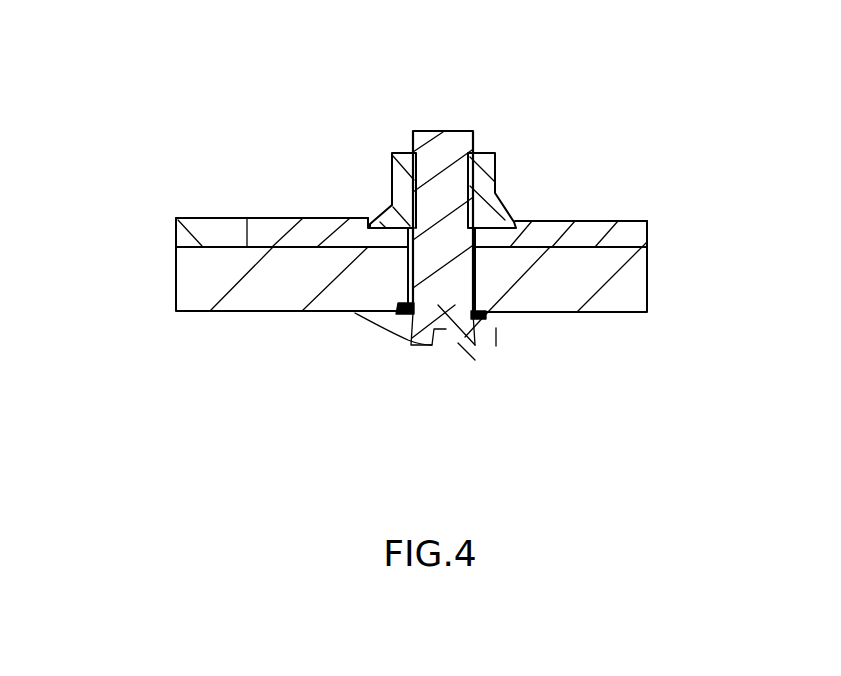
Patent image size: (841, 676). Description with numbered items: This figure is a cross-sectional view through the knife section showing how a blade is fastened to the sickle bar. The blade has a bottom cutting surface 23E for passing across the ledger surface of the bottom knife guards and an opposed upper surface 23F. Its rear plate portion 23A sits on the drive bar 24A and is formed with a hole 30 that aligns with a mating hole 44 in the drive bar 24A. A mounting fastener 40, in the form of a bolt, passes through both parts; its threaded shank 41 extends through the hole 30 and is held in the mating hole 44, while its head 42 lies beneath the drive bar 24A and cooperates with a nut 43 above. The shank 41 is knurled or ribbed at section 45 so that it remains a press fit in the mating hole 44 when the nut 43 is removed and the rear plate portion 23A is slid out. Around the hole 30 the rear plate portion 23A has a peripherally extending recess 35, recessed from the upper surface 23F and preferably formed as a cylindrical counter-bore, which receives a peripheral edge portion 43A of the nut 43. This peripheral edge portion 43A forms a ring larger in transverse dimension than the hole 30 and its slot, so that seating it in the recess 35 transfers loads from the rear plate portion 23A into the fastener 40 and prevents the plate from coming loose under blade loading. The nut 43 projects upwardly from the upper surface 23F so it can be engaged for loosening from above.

The rear plate portion 23A is at (625, 222).
The bottom cutting surface 23E is at (200, 248).
The upper surface 23F is at (228, 217).
The drive bar 24A is at (620, 288).
The hole 30 is at (368, 247).
The peripherally extending recess 35 is at (510, 220).
The mounting fastener 40 is at (445, 329).
The threaded shank 41 is at (440, 146).
The head 42 is at (487, 338).
The nut 43 is at (392, 168).
The peripheral edge portion 43A is at (390, 212).
The mating hole 44 is at (440, 313).
The knurled or ribbed section 45 is at (473, 325).